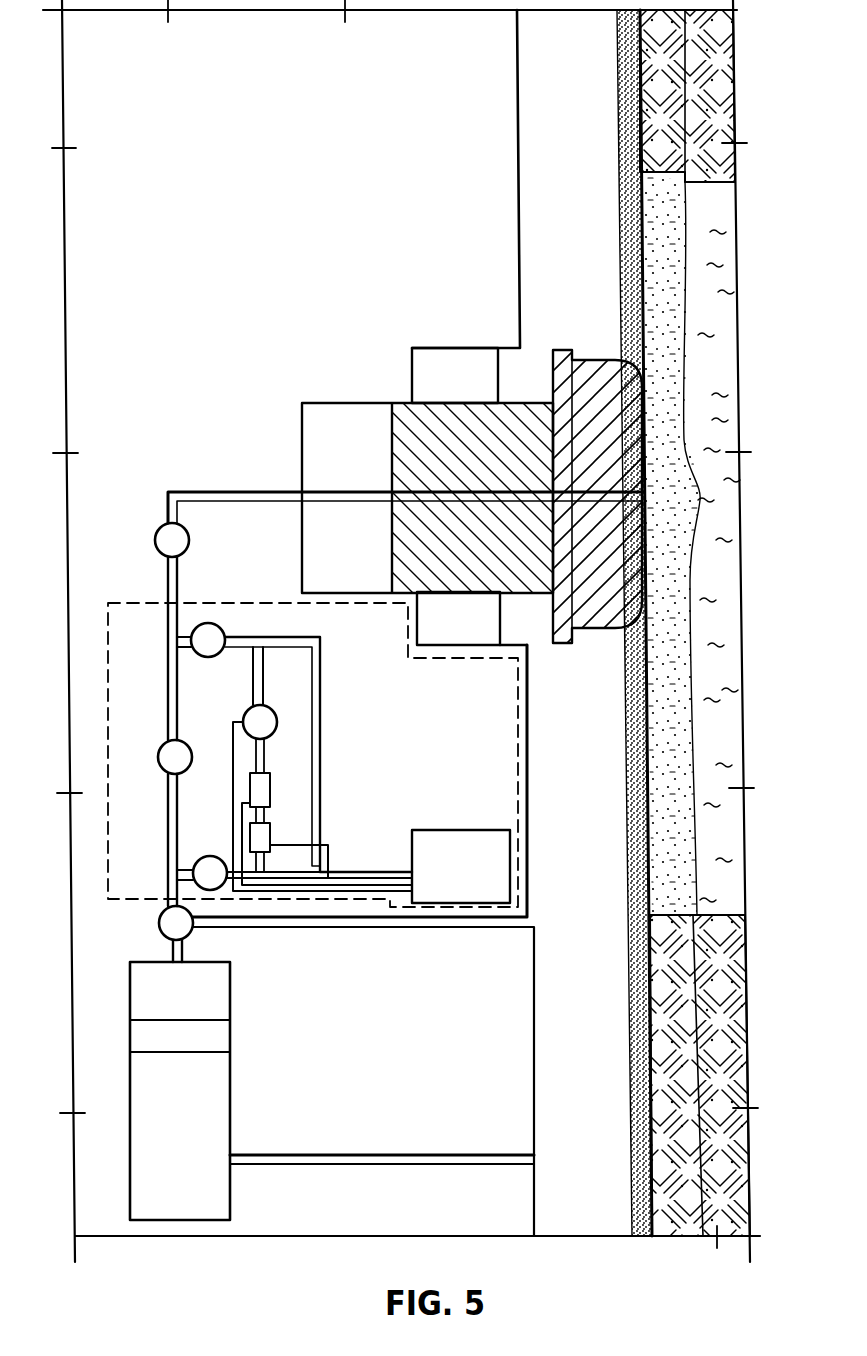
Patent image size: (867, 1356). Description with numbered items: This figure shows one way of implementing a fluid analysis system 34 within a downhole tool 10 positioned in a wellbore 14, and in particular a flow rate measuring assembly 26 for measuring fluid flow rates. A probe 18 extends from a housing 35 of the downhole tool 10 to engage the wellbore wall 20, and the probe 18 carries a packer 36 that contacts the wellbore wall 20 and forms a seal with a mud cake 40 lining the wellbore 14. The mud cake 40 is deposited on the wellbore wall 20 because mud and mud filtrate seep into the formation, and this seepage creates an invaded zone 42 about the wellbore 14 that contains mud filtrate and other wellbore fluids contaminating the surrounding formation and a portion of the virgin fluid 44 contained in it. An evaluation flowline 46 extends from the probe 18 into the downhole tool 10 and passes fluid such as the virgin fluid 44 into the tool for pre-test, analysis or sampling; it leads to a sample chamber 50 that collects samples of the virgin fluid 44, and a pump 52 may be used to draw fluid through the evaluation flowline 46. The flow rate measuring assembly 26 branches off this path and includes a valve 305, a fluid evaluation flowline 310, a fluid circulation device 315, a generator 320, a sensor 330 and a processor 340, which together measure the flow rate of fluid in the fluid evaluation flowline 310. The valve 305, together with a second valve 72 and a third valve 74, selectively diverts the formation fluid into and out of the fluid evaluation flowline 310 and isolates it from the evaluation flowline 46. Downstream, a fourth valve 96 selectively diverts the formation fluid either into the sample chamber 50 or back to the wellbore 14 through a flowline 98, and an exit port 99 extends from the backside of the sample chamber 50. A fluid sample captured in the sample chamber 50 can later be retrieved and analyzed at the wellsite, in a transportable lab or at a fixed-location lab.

The downhole tool 10 is at (522, 142).
The wellbore 14 is at (635, 198).
The probe 18 is at (563, 350).
The wellbore wall 20 is at (632, 742).
The flow rate measuring assembly 26 is at (221, 603).
The fluid analysis system 34 is at (204, 350).
The housing 35 is at (545, 950).
The packer 36 is at (608, 632).
The mud cake 40 is at (632, 1075).
The invaded zone 42 is at (672, 228).
The virgin fluid 44 is at (712, 258).
The evaluation flowline 46 is at (215, 492).
The sample chamber 50 is at (186, 1138).
The pump 52 is at (155, 540).
The second valve 72 is at (203, 858).
The third valve 74 is at (158, 757).
The fourth valve 96 is at (158, 926).
The flowline 98 is at (343, 928).
The exit port 99 is at (343, 1165).
The valve 305 is at (200, 657).
The fluid evaluation flowline 310 is at (243, 637).
The fluid circulation device 315 is at (268, 705).
The generator 320 is at (290, 768).
The sensor 330 is at (295, 832).
The processor 340 is at (460, 830).